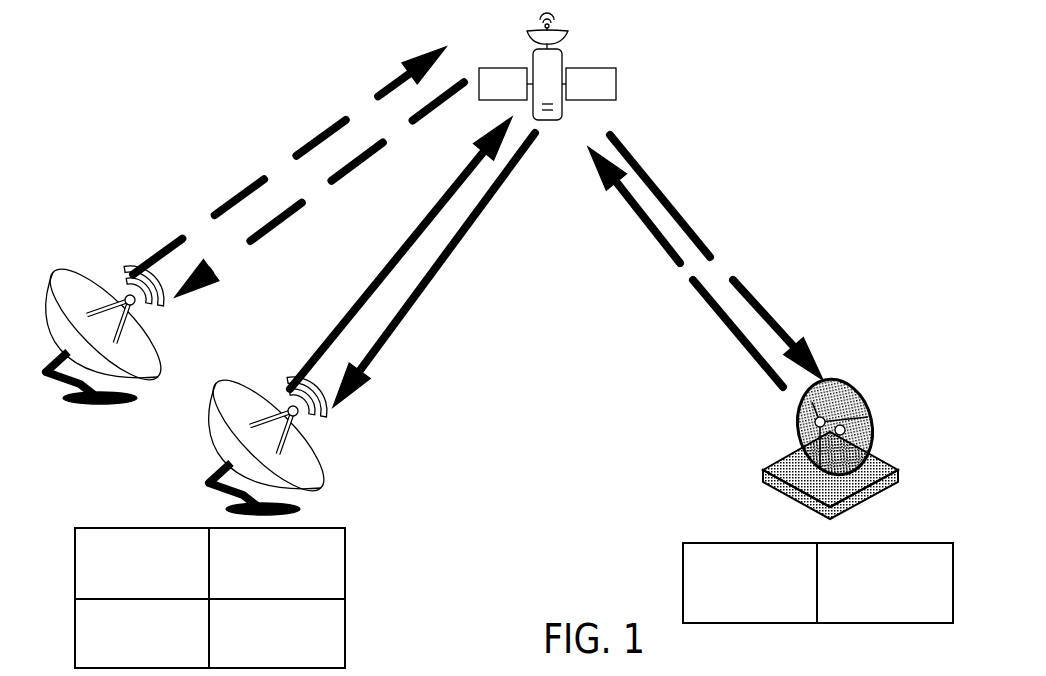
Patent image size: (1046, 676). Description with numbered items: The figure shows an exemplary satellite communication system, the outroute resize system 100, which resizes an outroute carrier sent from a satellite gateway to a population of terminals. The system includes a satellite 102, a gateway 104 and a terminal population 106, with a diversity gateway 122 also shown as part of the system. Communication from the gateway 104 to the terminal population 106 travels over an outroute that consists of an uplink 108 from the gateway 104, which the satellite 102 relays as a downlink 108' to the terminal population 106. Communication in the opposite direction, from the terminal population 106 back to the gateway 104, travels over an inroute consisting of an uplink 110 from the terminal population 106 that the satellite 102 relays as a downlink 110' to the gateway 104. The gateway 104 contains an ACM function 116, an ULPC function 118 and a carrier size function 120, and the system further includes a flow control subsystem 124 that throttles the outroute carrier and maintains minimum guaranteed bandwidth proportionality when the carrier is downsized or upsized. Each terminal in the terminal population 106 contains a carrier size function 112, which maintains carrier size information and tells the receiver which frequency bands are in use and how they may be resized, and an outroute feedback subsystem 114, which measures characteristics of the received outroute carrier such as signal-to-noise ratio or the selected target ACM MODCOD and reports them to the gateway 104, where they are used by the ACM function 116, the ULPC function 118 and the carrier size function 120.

The outroute resize system 100 is at (750, 56).
The satellite 102 is at (567, 38).
The gateway 104 is at (320, 466).
The terminal population 106 is at (877, 420).
The uplink 108 is at (401, 253).
The downlink 108' is at (716, 257).
The uplink 110 is at (685, 267).
The downlink 110' is at (434, 270).
The carrier size function 112 is at (750, 583).
The outroute feedback subsystem 114 is at (885, 583).
The ACM function 116 is at (142, 563).
The ULPC function 118 is at (277, 563).
The carrier size function 120 is at (142, 633).
The diversity gateway 122 is at (158, 353).
The flow control subsystem 124 is at (277, 633).